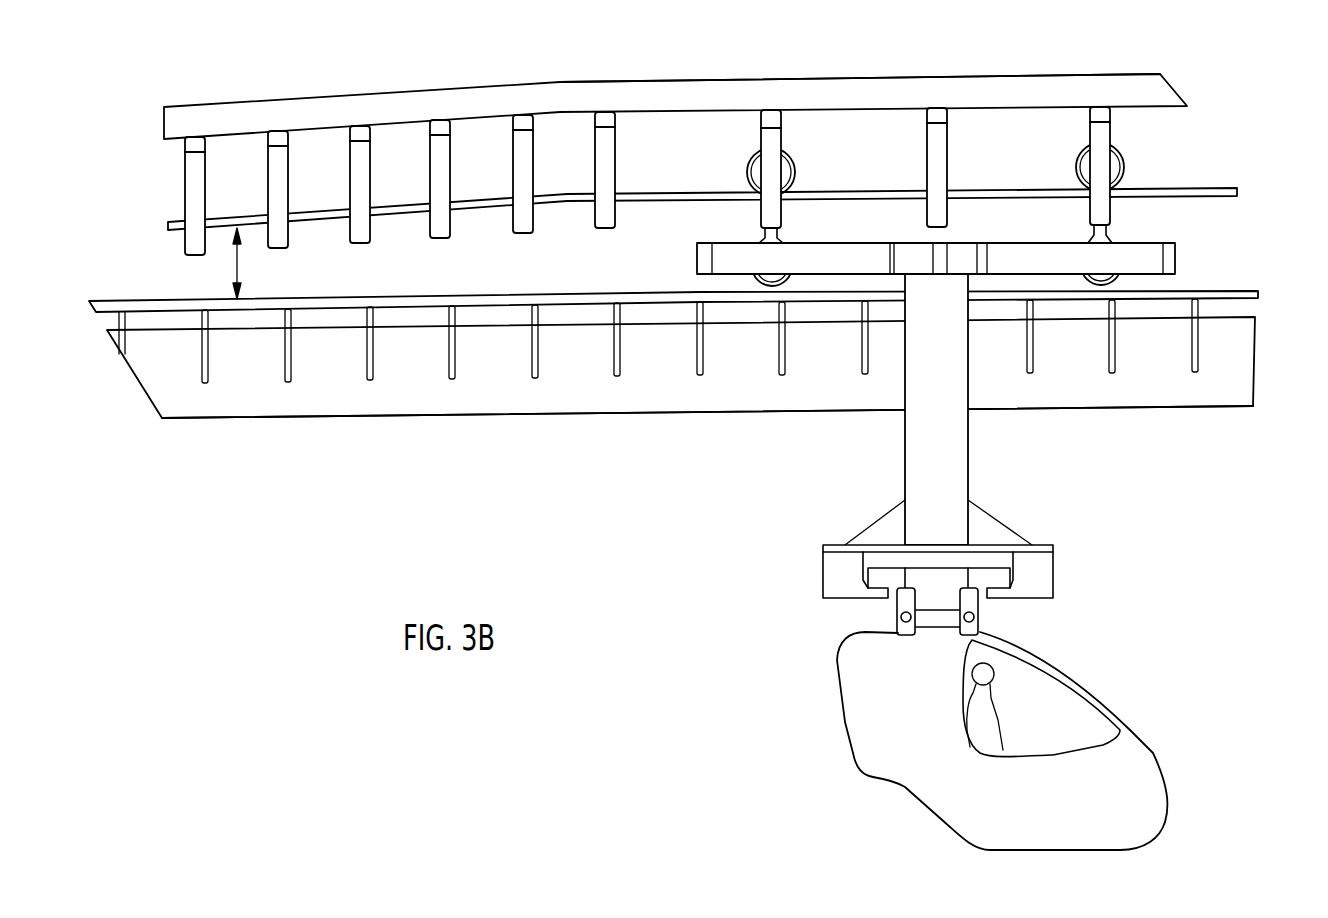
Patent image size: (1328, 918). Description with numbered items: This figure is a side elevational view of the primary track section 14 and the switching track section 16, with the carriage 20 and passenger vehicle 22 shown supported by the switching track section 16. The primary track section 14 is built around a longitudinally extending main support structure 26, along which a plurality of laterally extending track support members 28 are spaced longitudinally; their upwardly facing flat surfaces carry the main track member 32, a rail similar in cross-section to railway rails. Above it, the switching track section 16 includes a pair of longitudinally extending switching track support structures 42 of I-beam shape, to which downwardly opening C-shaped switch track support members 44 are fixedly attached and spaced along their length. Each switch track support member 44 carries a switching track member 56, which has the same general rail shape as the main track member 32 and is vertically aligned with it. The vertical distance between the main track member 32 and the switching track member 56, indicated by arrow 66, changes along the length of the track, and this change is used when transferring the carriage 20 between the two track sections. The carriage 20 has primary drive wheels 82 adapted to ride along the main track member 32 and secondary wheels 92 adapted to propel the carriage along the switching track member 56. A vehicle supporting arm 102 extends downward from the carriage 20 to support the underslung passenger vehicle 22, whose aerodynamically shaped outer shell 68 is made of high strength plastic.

The primary track section 14 is at (1258, 374).
The switching track section 16 is at (1178, 83).
The carriage 20 is at (1181, 246).
The passenger vehicle 22 is at (1097, 677).
The main support structure 26 is at (1143, 408).
The track support members 28 is at (1196, 342).
The main track member 32 is at (1259, 291).
The switching track support structures 42 is at (1111, 73).
The switch track support members 44 is at (1111, 124).
The switching track member 56 is at (1221, 183).
The vertical distance 66 is at (240, 259).
The outer shell 68 is at (1143, 740).
The primary drive wheels 82 is at (1113, 235).
The wheels 92 is at (795, 158).
The vehicle supporting arm 102 is at (970, 443).